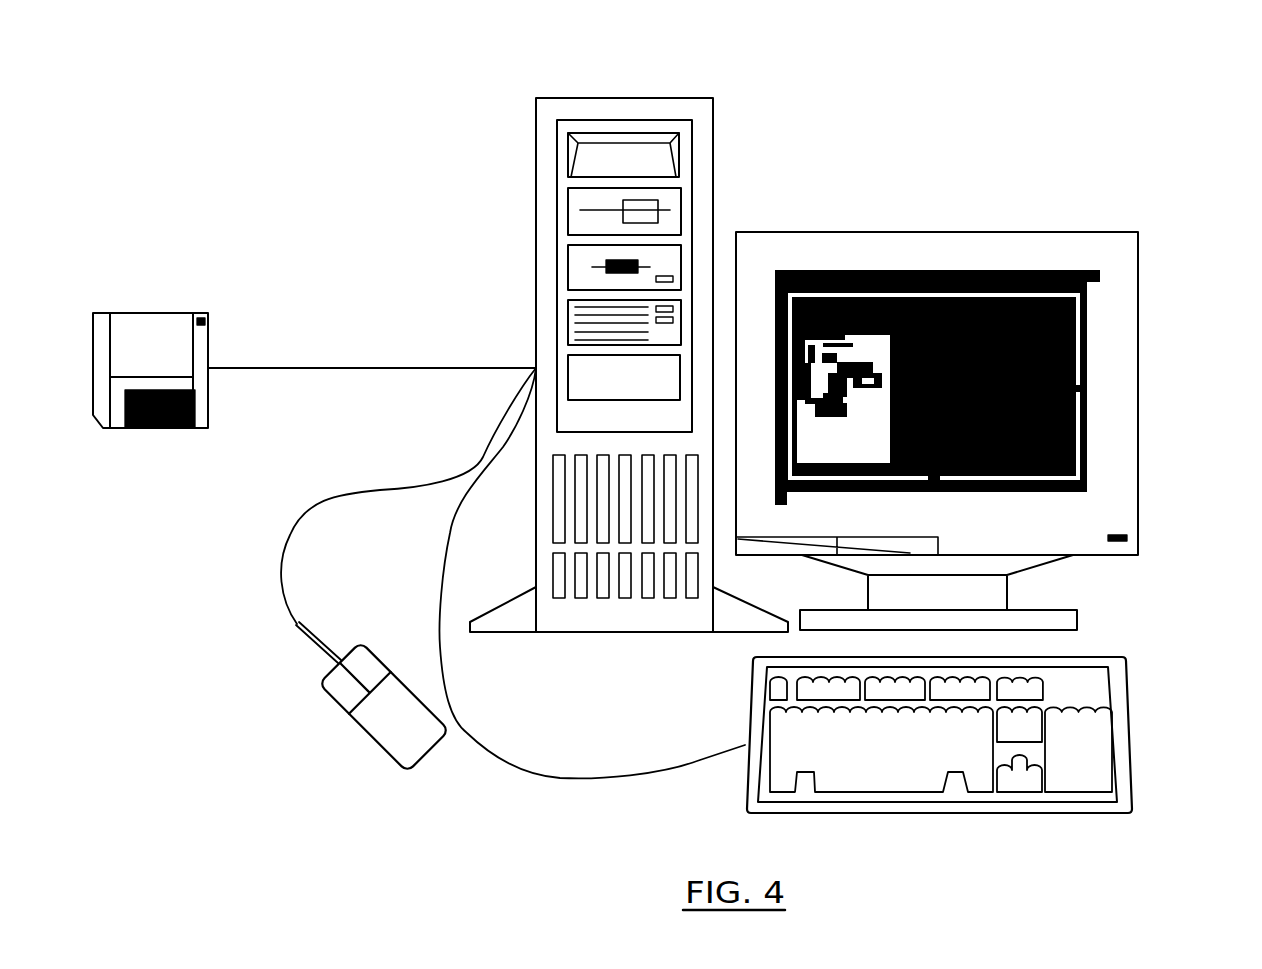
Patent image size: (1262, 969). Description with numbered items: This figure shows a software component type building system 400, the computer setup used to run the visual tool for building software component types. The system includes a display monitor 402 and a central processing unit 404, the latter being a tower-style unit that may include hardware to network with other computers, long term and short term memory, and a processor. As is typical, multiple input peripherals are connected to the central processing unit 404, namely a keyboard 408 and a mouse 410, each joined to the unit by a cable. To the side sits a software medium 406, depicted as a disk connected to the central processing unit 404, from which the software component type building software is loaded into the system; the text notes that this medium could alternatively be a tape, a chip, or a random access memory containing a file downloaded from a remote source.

The software component type building system 400 is at (190, 98).
The display monitor 402 is at (939, 232).
The central processing unit 404 is at (604, 98).
The software medium 406 is at (175, 357).
The keyboard 408 is at (1131, 735).
The mouse 410 is at (338, 718).